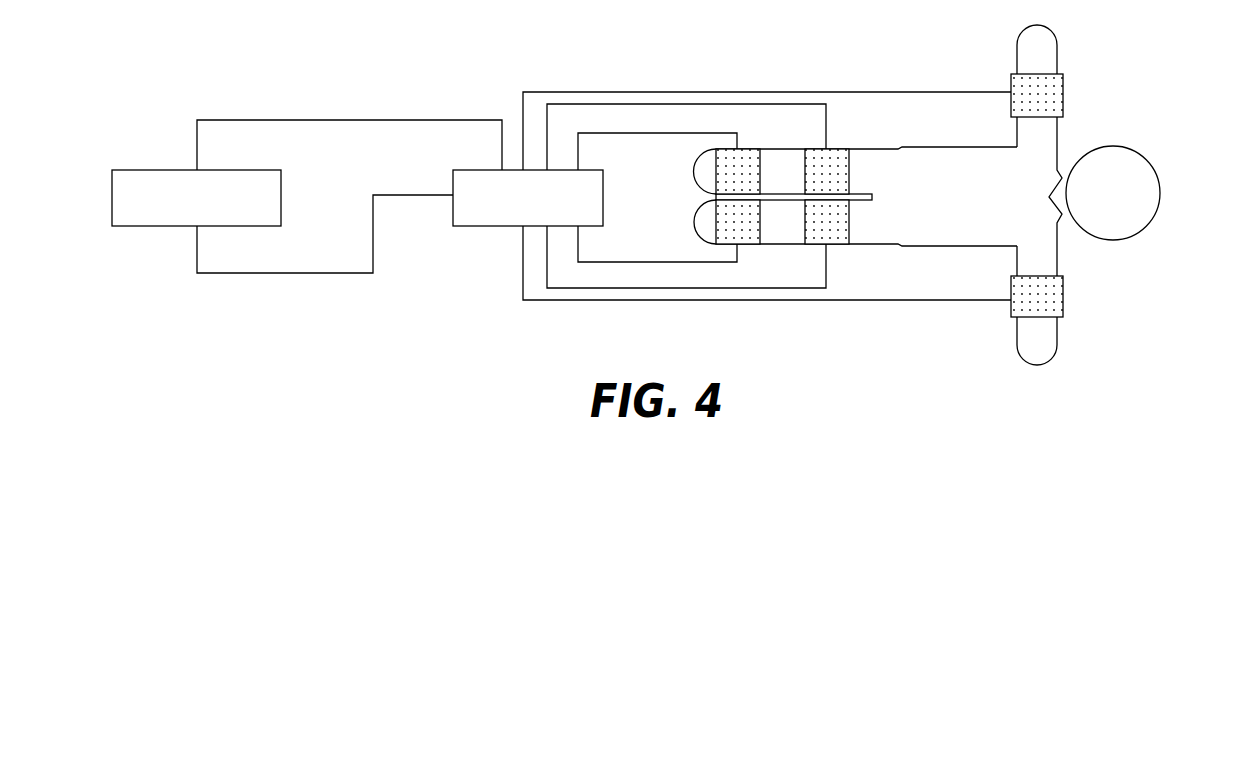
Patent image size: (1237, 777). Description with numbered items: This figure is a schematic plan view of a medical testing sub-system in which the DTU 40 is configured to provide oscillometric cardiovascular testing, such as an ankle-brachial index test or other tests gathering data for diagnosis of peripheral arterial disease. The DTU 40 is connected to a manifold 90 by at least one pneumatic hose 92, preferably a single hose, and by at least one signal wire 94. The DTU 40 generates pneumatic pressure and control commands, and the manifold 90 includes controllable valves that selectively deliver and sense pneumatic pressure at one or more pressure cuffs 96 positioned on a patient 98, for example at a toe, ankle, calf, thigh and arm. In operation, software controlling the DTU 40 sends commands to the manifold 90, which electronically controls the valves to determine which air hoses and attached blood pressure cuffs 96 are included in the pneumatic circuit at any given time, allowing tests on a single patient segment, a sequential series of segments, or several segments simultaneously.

The DTU 40 is at (140, 170).
The manifold 90 is at (480, 227).
The pneumatic hose 92 is at (348, 275).
The signal wire 94 is at (419, 119).
The pressure cuffs 96 is at (752, 162).
The patient 98 is at (1157, 170).